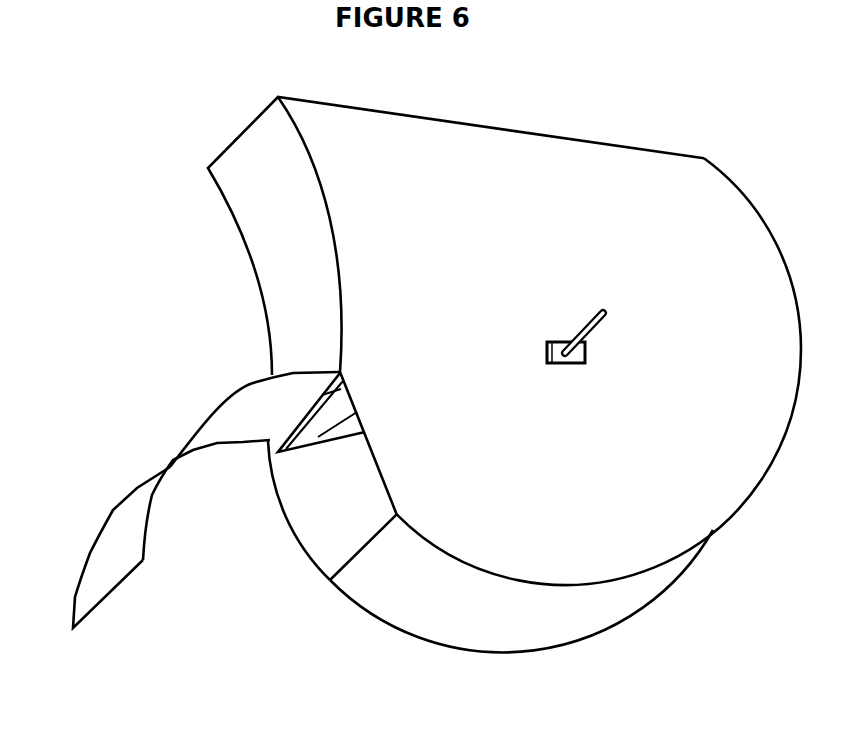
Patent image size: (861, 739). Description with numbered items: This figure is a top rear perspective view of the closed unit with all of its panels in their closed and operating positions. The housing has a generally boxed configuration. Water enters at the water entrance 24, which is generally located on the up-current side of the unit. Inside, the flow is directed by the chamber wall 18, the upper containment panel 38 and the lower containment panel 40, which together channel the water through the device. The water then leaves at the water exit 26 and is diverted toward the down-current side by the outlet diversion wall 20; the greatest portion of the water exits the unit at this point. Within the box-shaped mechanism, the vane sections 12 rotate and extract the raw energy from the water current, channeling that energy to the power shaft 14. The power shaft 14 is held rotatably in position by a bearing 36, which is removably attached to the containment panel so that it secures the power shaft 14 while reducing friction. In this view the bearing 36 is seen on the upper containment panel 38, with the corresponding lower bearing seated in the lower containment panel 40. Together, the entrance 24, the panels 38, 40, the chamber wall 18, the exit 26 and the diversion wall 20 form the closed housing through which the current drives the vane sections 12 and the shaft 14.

The vane sections 12 is at (323, 422).
The power shaft 14 is at (608, 322).
The chamber wall 18 is at (498, 628).
The outlet diversion wall 20 is at (110, 543).
The water entrance 24 is at (630, 122).
The water exit 26 is at (205, 572).
The bearing 36 is at (565, 365).
The upper containment panel 38 is at (428, 260).
The lower containment panel 40 is at (328, 502).